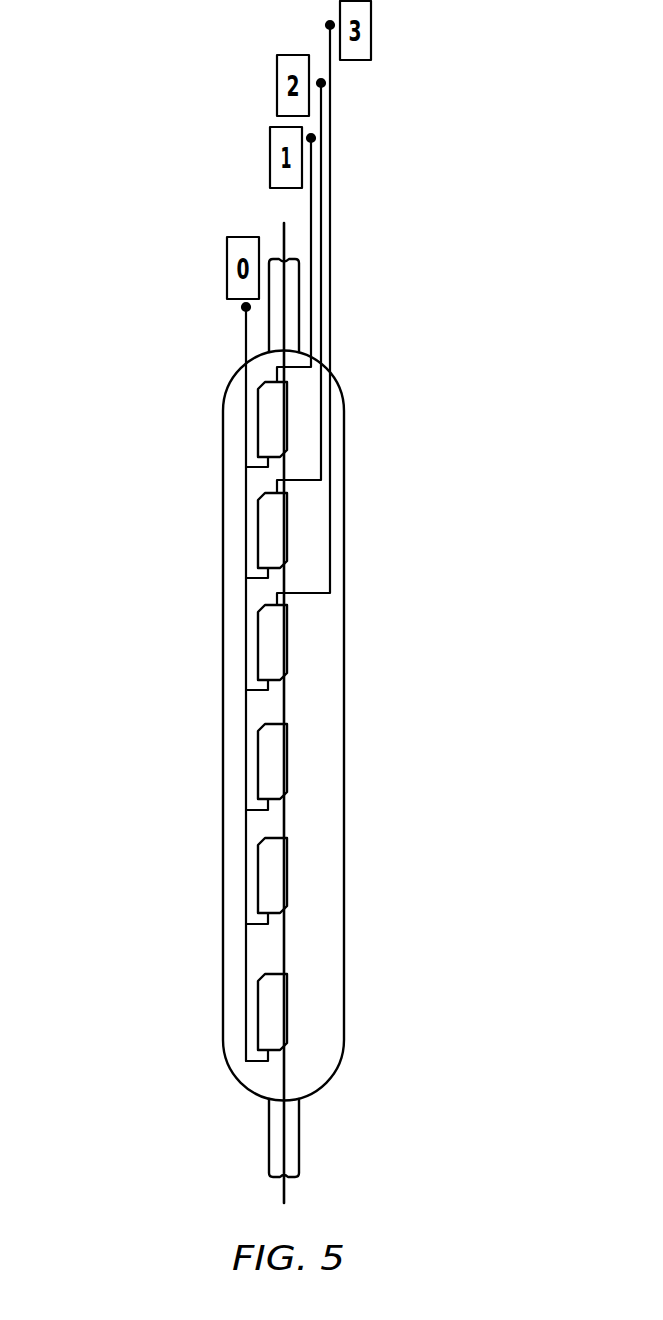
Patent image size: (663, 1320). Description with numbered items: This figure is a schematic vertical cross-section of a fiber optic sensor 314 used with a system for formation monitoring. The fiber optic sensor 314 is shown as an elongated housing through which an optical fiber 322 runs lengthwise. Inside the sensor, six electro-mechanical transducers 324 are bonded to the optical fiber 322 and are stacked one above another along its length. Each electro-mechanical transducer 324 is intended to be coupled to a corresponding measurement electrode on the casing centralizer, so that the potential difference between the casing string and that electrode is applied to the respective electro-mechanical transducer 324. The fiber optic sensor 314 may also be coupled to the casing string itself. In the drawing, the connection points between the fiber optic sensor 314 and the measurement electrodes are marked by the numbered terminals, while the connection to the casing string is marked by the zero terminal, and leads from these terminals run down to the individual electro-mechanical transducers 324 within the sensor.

The fiber optic sensor 314 is at (344, 848).
The optical fiber 322 is at (285, 1068).
The electro-mechanical transducer 324 is at (258, 412).